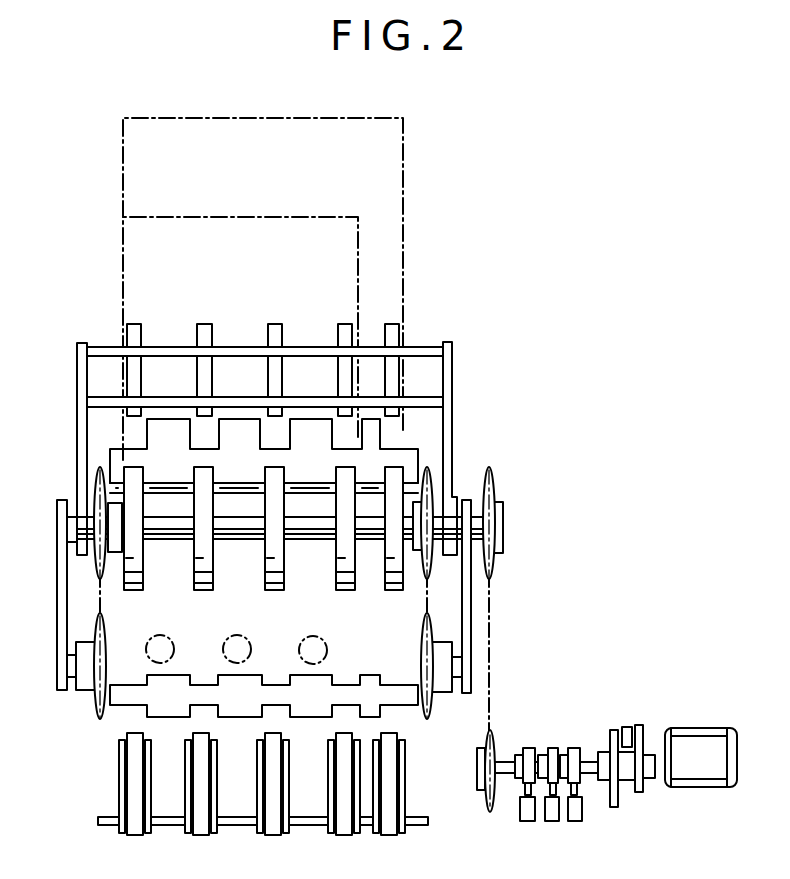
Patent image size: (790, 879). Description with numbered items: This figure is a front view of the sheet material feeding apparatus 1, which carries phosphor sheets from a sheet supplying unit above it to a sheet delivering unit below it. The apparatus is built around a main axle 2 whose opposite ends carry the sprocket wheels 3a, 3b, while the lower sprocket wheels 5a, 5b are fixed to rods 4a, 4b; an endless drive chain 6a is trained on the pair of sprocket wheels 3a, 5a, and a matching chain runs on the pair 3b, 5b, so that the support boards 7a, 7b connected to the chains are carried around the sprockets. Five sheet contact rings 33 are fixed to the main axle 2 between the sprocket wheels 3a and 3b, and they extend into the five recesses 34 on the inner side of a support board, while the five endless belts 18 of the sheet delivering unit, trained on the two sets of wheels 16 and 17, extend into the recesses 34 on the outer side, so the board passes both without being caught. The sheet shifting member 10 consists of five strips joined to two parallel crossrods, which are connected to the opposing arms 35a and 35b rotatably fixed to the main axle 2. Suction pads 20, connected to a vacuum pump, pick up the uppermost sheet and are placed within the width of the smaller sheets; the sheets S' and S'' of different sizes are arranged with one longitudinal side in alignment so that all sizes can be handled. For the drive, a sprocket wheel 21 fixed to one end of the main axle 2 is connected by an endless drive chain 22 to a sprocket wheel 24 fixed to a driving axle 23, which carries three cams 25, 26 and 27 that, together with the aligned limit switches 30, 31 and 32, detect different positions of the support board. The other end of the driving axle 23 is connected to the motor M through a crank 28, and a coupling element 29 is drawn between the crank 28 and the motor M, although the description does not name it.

The sheet material feeding apparatus 1 is at (545, 413).
The axle 2 is at (372, 528).
The sprocket wheel 3a is at (94, 565).
The sprocket wheel 3b is at (422, 578).
The rod 4a is at (57, 597).
The rod 4b is at (472, 589).
The sprocket wheel 5a is at (96, 700).
The sprocket wheel 5b is at (406, 666).
The endless drive chain 6a is at (104, 600).
The support board 7a is at (312, 497).
The support board 7b is at (350, 650).
The sheet shifting member 10 is at (212, 336).
The wheels 16 is at (145, 749).
The wheels 17 is at (143, 810).
The endless belts 18 is at (136, 780).
The suction pads 20 is at (222, 651).
The sprocket wheel 21 is at (496, 560).
The endless drive chain 22 is at (494, 670).
The driving axle 23 is at (498, 757).
The sprocket wheel 24 is at (483, 794).
The cam 25 is at (529, 748).
The cam 26 is at (551, 748).
The cam 27 is at (576, 750).
The crank 28 is at (600, 818).
The coupling 29 is at (656, 755).
The limit switch 30 is at (527, 822).
The limit switch 31 is at (552, 822).
The limit switch 32 is at (575, 822).
The sheet contact rings 33 is at (272, 558).
The recesses 34 is at (278, 700).
The arm 35a is at (77, 366).
The arm 35b is at (453, 372).
The motor M is at (698, 742).
The phosphor sheet S' is at (240, 304).
The phosphor sheet S'' is at (263, 267).